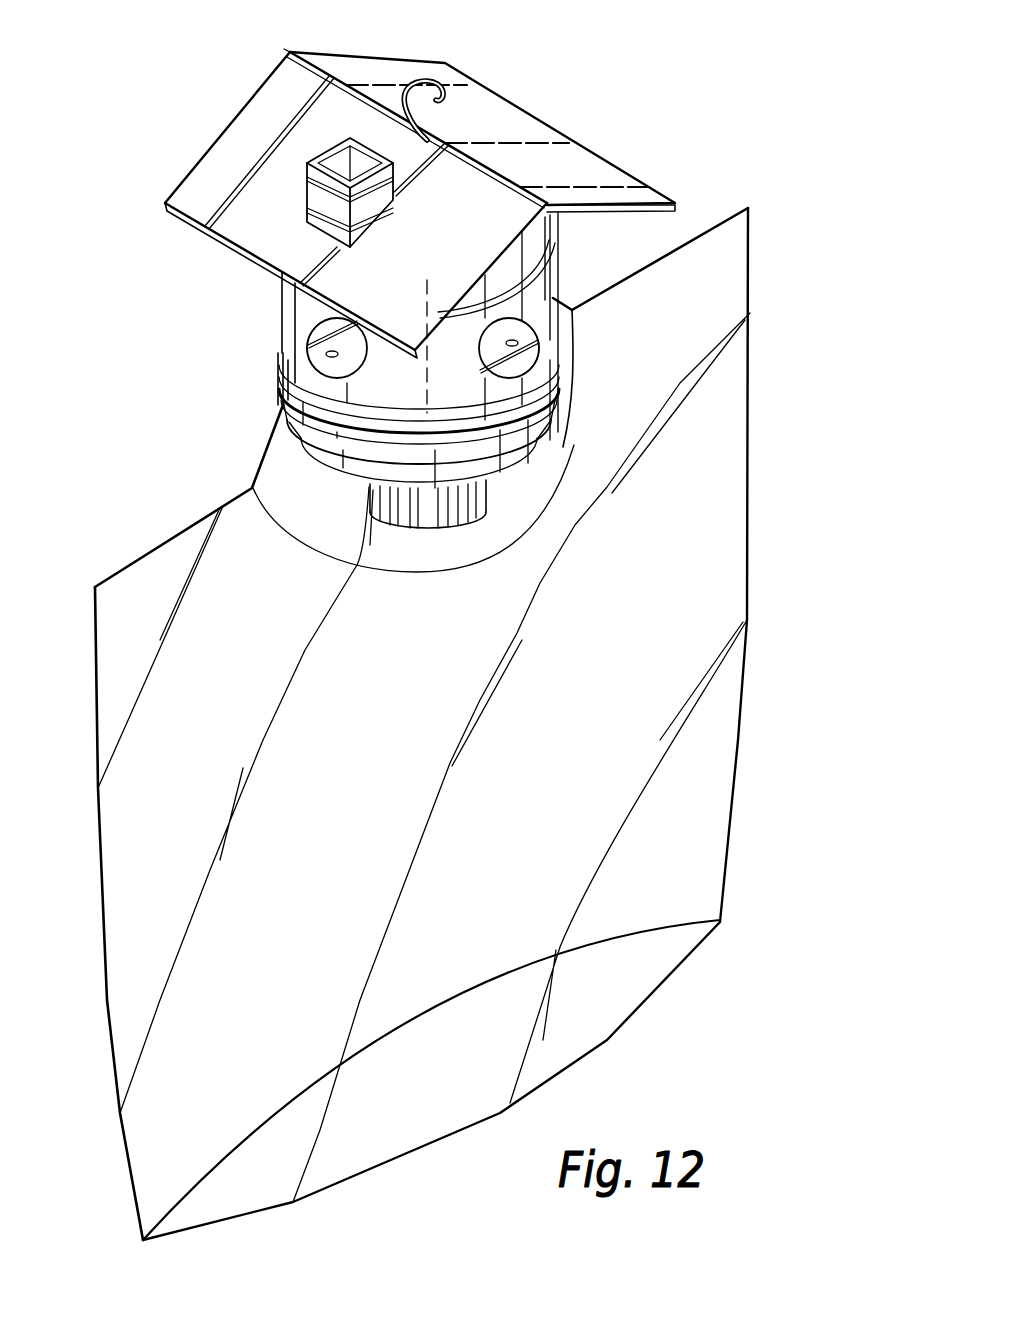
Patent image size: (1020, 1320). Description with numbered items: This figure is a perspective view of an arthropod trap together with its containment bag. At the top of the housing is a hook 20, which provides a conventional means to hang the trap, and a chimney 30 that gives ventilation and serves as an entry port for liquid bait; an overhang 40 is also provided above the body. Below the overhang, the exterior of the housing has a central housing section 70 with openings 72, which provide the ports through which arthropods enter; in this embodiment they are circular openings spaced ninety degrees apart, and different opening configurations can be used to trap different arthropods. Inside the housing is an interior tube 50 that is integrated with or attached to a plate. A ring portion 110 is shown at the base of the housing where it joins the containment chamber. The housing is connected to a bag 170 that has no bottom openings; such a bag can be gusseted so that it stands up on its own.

The hook 20 is at (438, 84).
The chimney 30 is at (306, 200).
The overhang 40 is at (613, 168).
The interior tube 50 is at (457, 528).
The central housing section 70 is at (300, 315).
The openings 72 is at (555, 298).
The collar ring 110 is at (553, 400).
The bag 170 is at (160, 542).